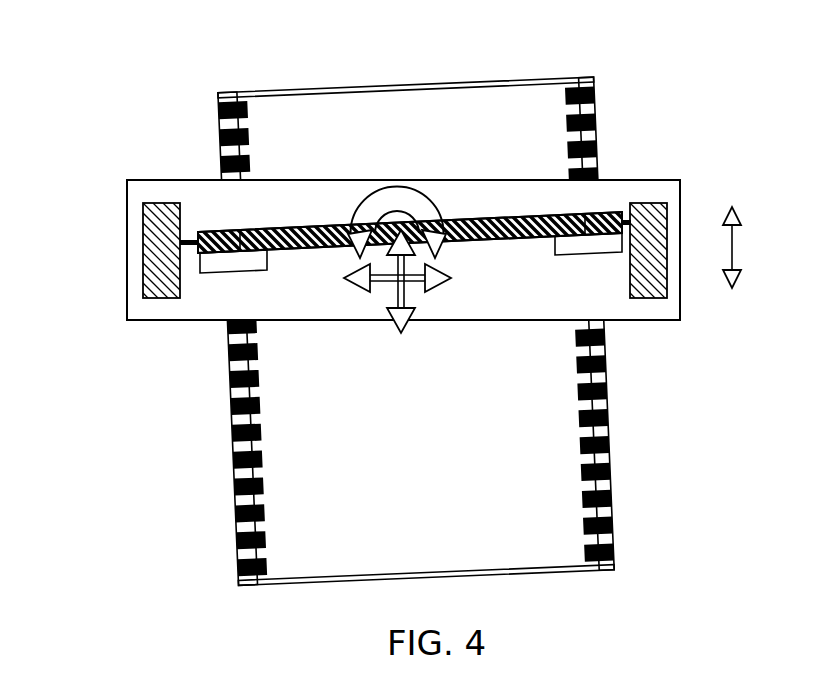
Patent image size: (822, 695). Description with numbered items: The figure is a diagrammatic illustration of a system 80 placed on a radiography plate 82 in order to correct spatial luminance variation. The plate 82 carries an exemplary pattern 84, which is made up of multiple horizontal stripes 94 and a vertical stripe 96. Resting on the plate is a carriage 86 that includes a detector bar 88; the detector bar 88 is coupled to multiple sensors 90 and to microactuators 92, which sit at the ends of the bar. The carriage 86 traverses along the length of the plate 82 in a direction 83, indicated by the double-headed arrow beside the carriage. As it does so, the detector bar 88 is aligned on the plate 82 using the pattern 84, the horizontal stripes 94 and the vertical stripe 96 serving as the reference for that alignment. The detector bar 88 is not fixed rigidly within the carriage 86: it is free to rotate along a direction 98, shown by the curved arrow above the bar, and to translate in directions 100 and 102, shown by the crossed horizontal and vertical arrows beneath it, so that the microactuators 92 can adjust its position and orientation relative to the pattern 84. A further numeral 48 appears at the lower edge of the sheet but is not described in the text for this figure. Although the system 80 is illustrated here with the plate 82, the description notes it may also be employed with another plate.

The wafer / substrate 48 is at (705, 694).
The system 80 is at (112, 47).
The radiography plate 82 is at (393, 331).
The direction 83 is at (733, 245).
The exemplary pattern 84 is at (426, 575).
The carriage 86 is at (127, 200).
The detector bar 88 is at (600, 220).
The sensors 90 is at (243, 262).
The microactuators 92 is at (143, 253).
The horizontal stripes 94 is at (243, 339).
The vertical stripe 96 is at (590, 324).
The direction 98 is at (397, 187).
The direction 100 is at (440, 283).
The direction 102 is at (398, 334).